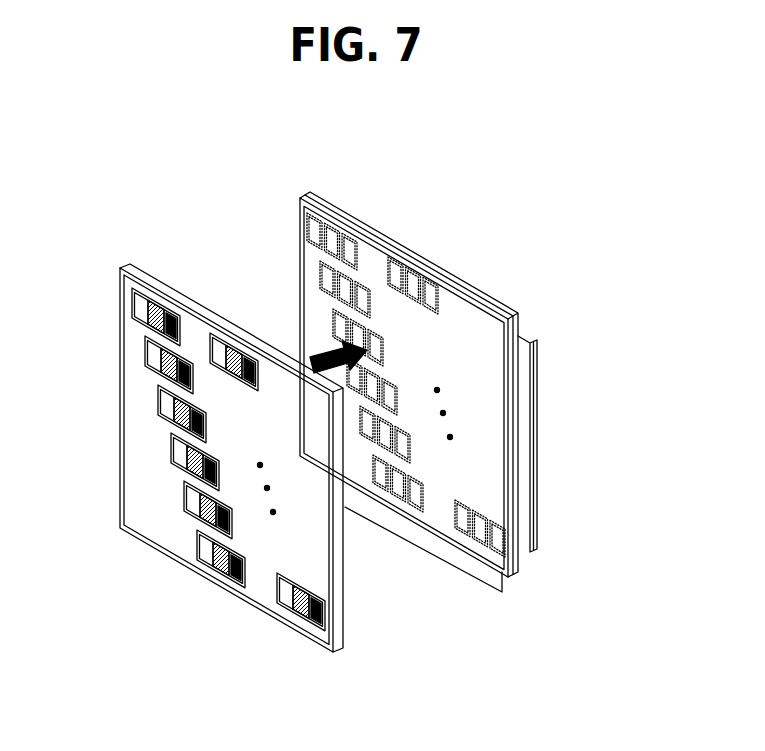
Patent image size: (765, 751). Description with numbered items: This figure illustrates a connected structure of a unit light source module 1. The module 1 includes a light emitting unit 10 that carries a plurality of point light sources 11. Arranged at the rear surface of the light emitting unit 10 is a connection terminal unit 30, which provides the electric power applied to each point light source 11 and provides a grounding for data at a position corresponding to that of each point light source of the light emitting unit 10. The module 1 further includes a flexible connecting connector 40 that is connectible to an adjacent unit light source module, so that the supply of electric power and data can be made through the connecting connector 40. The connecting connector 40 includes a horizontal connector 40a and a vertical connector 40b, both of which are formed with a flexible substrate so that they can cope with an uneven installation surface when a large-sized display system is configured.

The unit light source module 1 is at (468, 252).
The light emitting unit 10 is at (138, 470).
The point light source 11 is at (138, 302).
The connection terminal unit 30 is at (366, 230).
The connecting connector 40 is at (636, 540).
The horizontal connector 40a is at (500, 590).
The vertical connector 40b is at (524, 520).